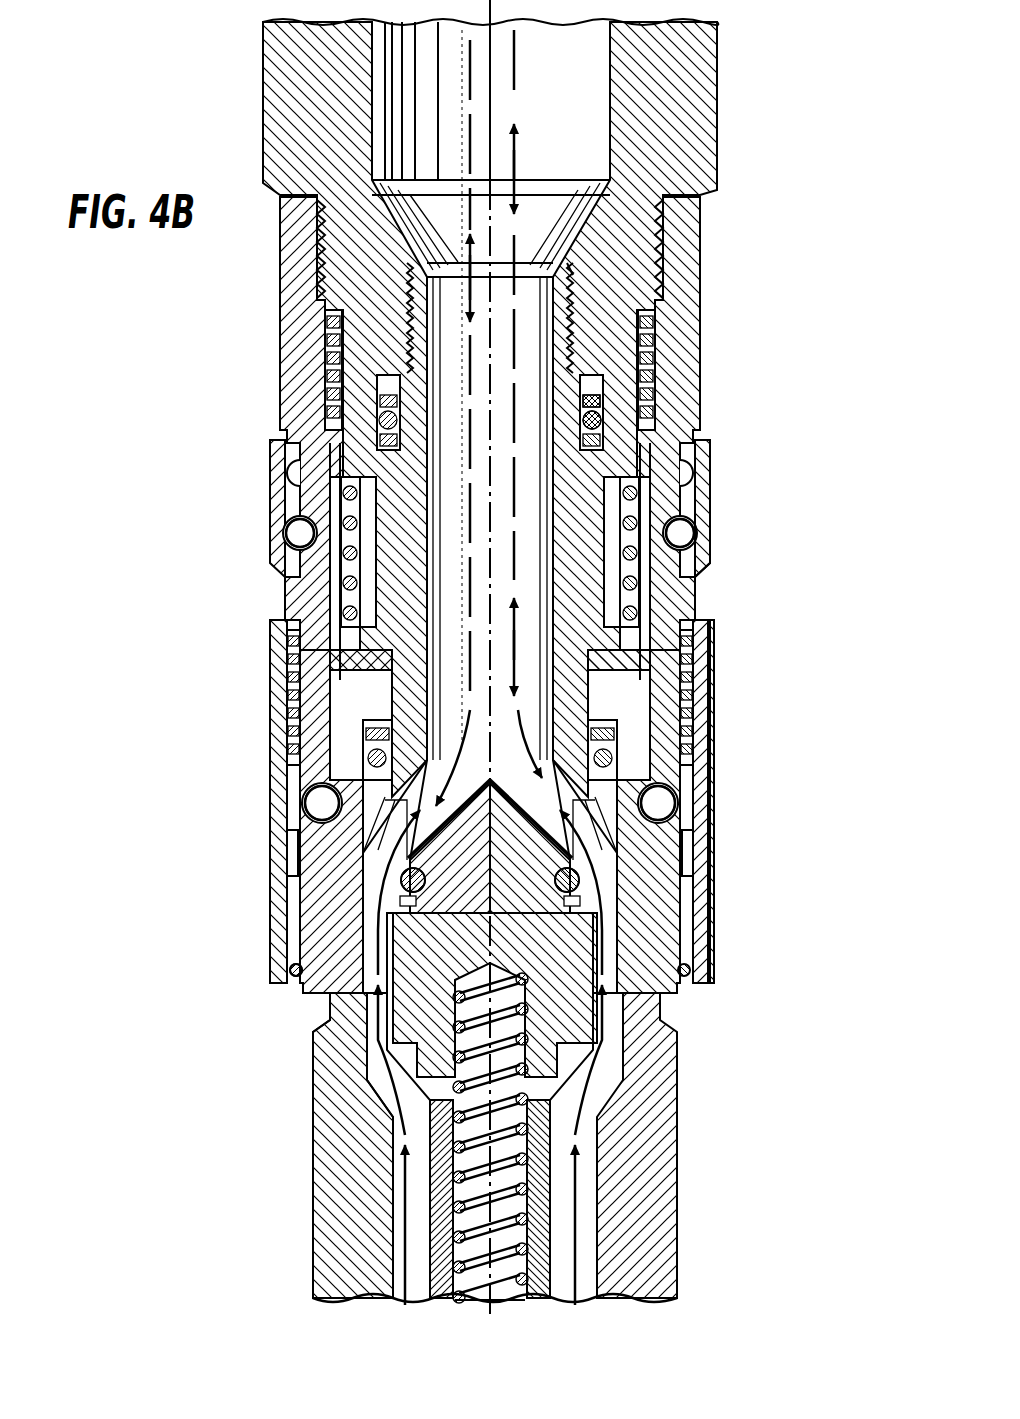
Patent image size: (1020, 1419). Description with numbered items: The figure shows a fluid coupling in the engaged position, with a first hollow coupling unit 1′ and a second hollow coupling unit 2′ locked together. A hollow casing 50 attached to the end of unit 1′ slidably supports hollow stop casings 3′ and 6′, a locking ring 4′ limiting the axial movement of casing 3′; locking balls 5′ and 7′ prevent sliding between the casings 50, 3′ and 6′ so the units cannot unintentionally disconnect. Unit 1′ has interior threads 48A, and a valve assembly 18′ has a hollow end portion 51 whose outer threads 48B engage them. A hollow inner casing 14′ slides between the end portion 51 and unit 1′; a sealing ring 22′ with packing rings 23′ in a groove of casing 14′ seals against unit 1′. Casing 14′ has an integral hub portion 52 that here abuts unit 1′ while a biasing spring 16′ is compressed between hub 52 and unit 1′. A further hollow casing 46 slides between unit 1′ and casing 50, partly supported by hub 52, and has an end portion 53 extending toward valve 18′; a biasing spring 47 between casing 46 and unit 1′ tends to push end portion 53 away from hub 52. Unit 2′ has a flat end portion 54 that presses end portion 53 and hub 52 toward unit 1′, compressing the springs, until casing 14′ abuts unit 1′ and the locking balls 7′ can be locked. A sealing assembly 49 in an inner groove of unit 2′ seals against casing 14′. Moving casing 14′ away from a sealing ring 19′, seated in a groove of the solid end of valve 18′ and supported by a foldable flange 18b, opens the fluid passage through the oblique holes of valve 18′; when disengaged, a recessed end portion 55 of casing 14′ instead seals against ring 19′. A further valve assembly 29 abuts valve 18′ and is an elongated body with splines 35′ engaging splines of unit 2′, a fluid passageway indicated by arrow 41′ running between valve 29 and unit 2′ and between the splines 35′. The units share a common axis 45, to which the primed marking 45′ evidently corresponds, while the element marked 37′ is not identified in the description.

The first hollow coupling unit 1′ is at (252, 140).
The second hollow coupling unit 2′ is at (302, 1077).
The hollow stop casing 3′ is at (290, 933).
The locking ring 4′ is at (290, 970).
The locking ball 5′ is at (288, 534).
The hollow stop casing 6′ is at (700, 566).
The locking ball 7′ is at (305, 803).
The inner casing 14′ is at (588, 730).
The biasing spring 16′ is at (618, 505).
The valve assembly 18′ is at (470, 874).
The foldable flange 18b is at (561, 978).
The sealing ring 19′ is at (560, 880).
The sealing ring 22′ is at (582, 422).
The packing rings 23′ is at (582, 398).
The valve assembly 29 is at (460, 966).
The splines 35′ is at (410, 1228).
The spring 37′ is at (492, 1302).
The fluid passageway 41′ is at (514, 128).
The common axis 45 is at (490, 170).
The common axis 45′ is at (500, 715).
The hollow casing 46 is at (345, 600).
The biasing spring 47 is at (340, 328).
The threads 48A is at (569, 290).
The threads 48B is at (573, 330).
The sealing assembly 49 is at (378, 722).
The hollow casing 50 is at (300, 342).
The hollow end portion 51 is at (565, 348).
The hub portion 52 is at (600, 645).
The end portion 53 is at (595, 660).
The flat end portion 54 is at (288, 698).
The recessed end portion 55 is at (570, 785).